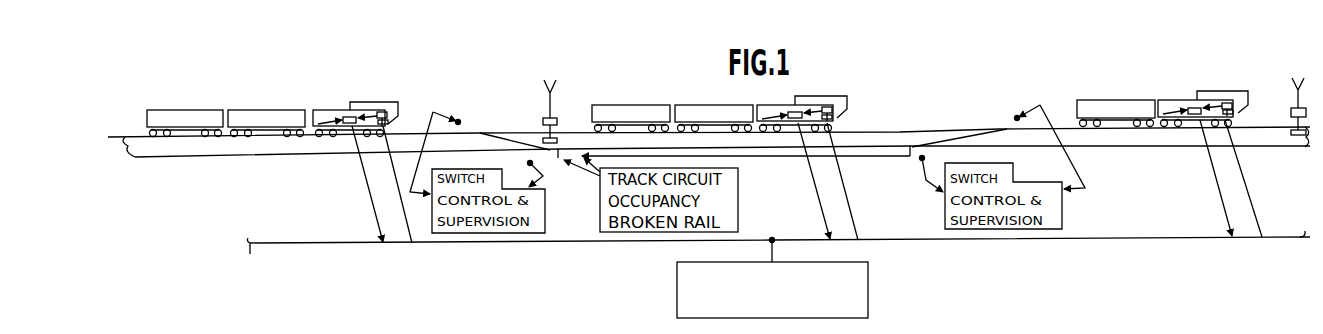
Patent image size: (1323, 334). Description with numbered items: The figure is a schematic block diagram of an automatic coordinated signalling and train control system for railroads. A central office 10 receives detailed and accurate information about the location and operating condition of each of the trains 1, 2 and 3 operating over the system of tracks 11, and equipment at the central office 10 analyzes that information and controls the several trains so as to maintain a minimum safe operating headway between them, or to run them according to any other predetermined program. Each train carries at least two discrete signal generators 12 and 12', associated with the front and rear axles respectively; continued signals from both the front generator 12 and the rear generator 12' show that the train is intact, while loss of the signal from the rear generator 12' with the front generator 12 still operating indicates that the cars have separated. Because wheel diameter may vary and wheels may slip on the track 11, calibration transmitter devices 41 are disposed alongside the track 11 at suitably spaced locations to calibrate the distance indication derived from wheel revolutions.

The train 1 is at (299, 104).
The train 2 is at (720, 102).
The train 3 is at (1118, 95).
The central office 10 is at (871, 281).
The tracks 11 is at (976, 127).
The discrete signal generator 12 is at (795, 156).
The rear discrete signal generator 12' is at (636, 105).
The calibration transmitter device 41 is at (537, 121).